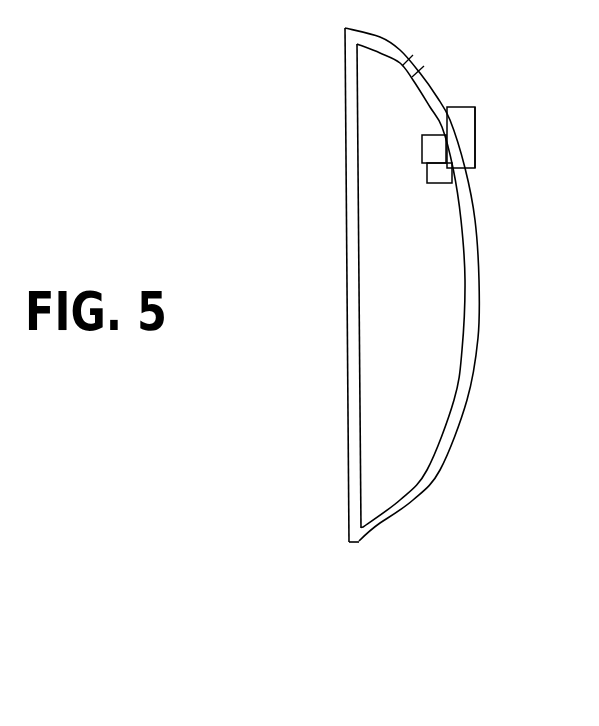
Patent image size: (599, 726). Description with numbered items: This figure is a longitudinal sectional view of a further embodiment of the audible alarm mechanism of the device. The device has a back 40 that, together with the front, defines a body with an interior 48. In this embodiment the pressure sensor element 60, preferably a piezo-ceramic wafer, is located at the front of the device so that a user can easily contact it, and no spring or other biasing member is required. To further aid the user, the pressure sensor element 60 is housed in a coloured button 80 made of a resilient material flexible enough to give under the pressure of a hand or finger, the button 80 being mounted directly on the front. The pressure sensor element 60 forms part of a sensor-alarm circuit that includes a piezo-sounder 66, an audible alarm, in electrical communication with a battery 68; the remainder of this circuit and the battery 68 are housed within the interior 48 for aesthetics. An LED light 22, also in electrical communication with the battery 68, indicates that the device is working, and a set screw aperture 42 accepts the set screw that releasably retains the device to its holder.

The LED light 22 is at (410, 70).
The back 40 is at (356, 104).
The set screw aperture 42 is at (478, 338).
The interior 48 is at (425, 400).
The pressure sensor element 60 is at (455, 107).
The piezo-sounder 66 is at (437, 172).
The battery 68 is at (432, 147).
The coloured button 80 is at (469, 133).